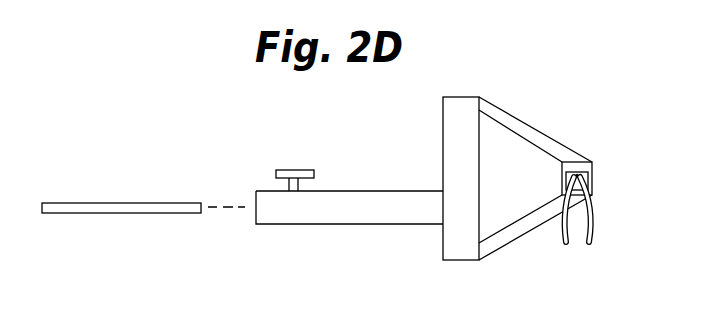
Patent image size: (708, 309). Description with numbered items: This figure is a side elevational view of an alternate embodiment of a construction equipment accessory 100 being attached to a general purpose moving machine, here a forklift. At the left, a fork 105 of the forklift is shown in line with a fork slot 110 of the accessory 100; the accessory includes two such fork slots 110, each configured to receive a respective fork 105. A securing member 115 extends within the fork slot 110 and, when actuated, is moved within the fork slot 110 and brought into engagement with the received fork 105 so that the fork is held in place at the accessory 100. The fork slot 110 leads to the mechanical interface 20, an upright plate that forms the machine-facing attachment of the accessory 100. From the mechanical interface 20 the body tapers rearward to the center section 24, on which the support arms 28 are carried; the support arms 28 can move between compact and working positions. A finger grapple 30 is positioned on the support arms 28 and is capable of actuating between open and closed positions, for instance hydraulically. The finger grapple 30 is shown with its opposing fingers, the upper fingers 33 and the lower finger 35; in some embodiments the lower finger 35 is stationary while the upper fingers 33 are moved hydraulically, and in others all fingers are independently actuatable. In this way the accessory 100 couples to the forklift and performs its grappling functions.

The construction equipment accessory 100 is at (548, 107).
The mechanical interface 20 is at (455, 117).
The center section 24 is at (590, 160).
The support arms 28 is at (592, 168).
The finger grapples 30 is at (594, 222).
The upper fingers 33 is at (597, 227).
The lower finger 35 is at (561, 237).
The forks 105 is at (90, 203).
The fork slots 110 is at (368, 200).
The securing member 115 is at (275, 175).